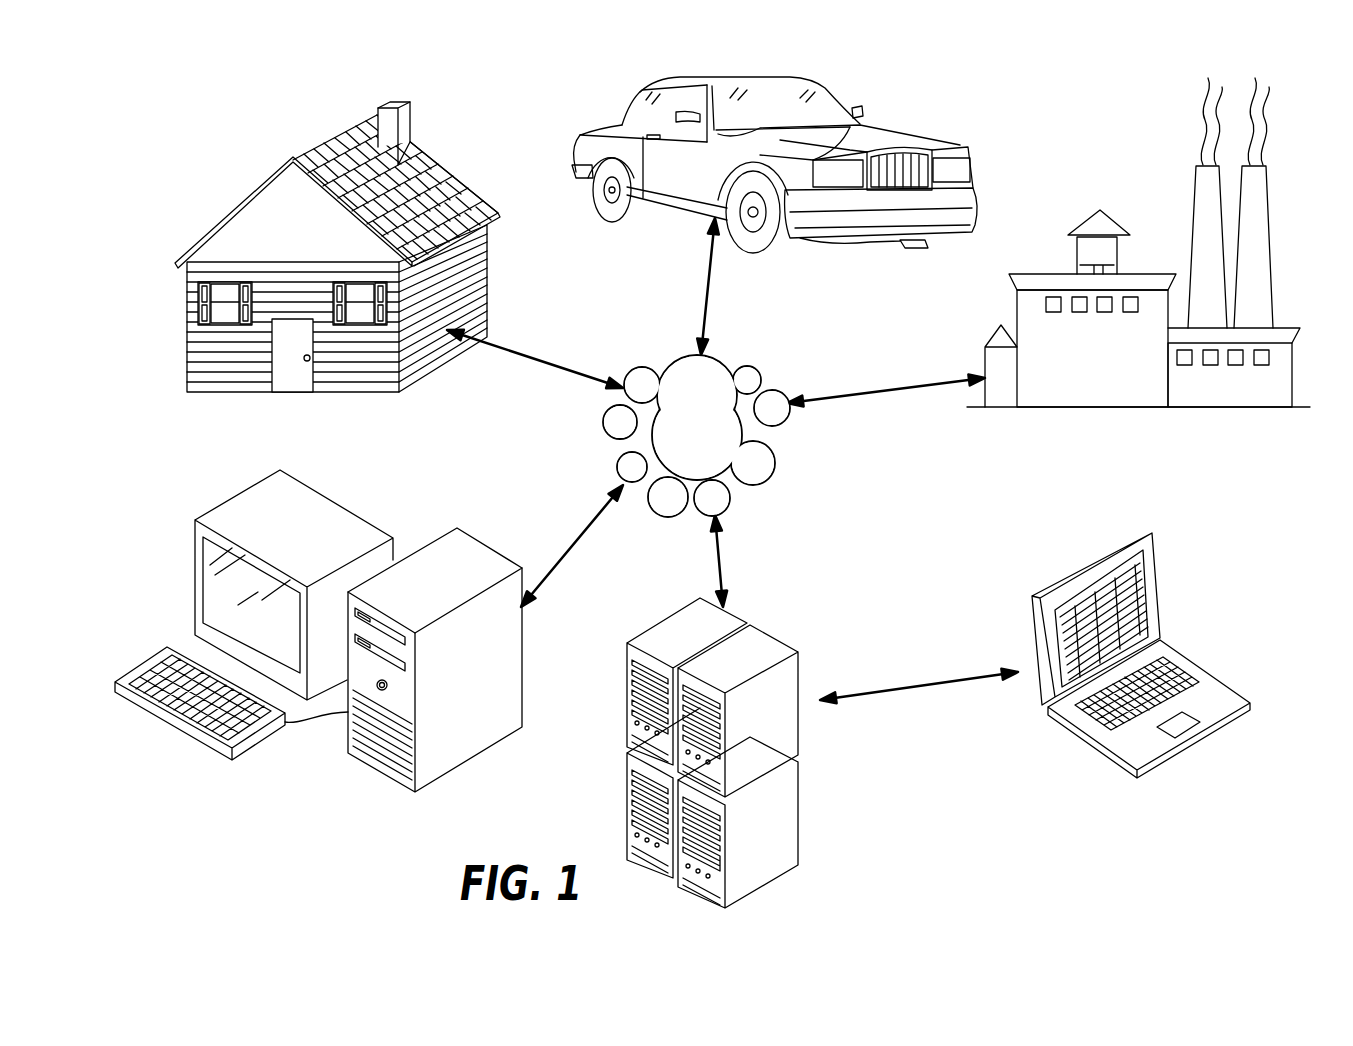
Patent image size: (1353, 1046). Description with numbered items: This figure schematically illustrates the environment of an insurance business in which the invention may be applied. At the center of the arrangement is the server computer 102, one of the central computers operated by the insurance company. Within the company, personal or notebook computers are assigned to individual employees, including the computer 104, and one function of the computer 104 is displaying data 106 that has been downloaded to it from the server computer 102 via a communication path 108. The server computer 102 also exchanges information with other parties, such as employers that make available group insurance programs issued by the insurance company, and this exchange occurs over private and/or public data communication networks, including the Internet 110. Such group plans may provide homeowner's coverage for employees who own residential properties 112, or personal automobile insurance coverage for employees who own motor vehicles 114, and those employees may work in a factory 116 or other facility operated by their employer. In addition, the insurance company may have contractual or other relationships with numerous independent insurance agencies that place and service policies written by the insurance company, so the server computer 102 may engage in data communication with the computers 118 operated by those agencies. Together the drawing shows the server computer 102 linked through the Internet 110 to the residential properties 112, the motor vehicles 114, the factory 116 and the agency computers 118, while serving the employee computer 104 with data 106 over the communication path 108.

The server computer 102 is at (776, 636).
The computer 104 is at (1148, 649).
The data 106 is at (1113, 577).
The communication path 108 is at (934, 682).
The Internet 110 is at (750, 368).
The residential properties 112 is at (228, 393).
The motor vehicles 114 is at (672, 212).
The factory 116 is at (1090, 407).
The computers 118 is at (363, 520).